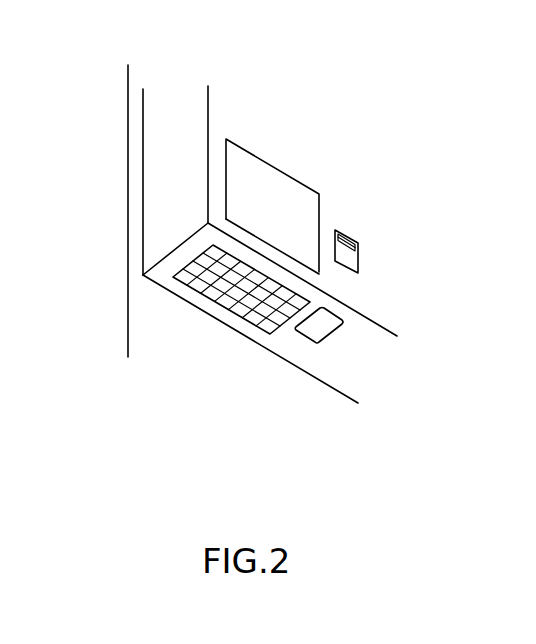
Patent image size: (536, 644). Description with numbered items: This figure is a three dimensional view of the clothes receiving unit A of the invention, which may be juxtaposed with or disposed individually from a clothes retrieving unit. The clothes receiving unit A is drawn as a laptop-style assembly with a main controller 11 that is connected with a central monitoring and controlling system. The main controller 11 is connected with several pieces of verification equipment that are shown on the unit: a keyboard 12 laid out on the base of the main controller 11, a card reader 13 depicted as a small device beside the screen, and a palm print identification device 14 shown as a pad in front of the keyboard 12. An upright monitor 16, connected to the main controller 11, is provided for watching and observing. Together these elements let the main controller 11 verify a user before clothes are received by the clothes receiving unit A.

The clothes receiving unit A is at (128, 212).
The main controller 11 is at (178, 247).
The keyboard 12 is at (225, 302).
The card reader 13 is at (353, 254).
The palm print identification device 14 is at (308, 340).
The monitor 16 is at (286, 182).